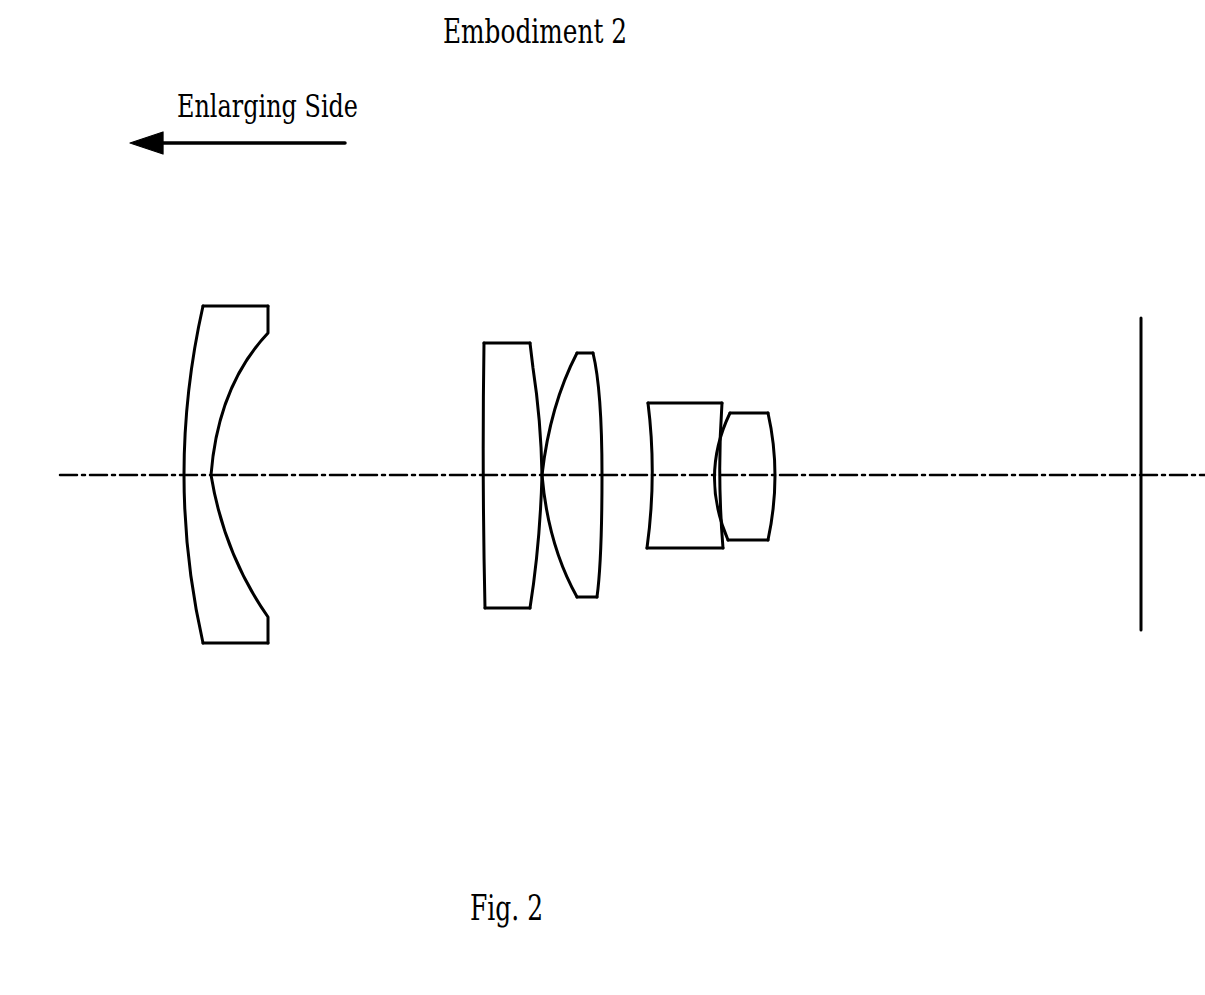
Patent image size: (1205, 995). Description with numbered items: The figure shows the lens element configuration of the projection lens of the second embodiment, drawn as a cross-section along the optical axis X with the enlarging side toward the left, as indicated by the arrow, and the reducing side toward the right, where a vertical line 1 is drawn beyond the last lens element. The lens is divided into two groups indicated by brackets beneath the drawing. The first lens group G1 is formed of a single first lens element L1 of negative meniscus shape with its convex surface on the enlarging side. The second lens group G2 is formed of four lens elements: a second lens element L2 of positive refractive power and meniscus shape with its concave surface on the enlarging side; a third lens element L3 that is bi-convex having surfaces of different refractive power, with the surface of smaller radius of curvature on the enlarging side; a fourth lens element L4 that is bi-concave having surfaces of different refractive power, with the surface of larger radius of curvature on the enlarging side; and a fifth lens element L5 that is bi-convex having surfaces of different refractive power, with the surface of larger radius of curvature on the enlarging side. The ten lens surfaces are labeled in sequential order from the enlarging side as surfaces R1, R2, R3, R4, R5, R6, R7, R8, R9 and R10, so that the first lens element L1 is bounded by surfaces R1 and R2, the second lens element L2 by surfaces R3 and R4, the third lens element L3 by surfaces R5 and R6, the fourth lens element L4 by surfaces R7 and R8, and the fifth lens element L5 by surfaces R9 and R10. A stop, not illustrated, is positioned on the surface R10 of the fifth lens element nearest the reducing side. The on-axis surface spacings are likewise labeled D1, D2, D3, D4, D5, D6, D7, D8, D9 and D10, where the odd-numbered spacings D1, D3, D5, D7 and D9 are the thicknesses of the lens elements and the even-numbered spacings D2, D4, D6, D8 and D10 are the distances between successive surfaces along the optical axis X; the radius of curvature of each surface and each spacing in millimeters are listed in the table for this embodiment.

The optical axis X is at (78, 477).
The image plane (screen / display element) 1 is at (1139, 373).
The first lens group G1 is at (283, 745).
The second lens group G2 is at (780, 745).
The first lens element L1 is at (211, 429).
The second lens element L2 is at (476, 433).
The third lens element L3 is at (592, 409).
The fourth lens element L4 is at (681, 406).
The fifth lens element L5 is at (787, 430).
The lens element surface R1 is at (190, 368).
The lens element surface R2 is at (237, 373).
The lens element surface R3 is at (483, 390).
The lens element surface R4 is at (541, 454).
The lens element surface R5 is at (553, 368).
The lens element surface R6 is at (600, 397).
The lens element surface R7 is at (653, 432).
The lens element surface R8 is at (714, 447).
The lens element surface R9 is at (725, 430).
The lens element surface R10 is at (778, 470).
The surface spacing D1 is at (203, 480).
The surface spacing D2 is at (313, 477).
The surface spacing D3 is at (514, 503).
The surface spacing D4 is at (541, 505).
The surface spacing D5 is at (571, 503).
The surface spacing D6 is at (607, 478).
The surface spacing D7 is at (686, 503).
The surface spacing D8 is at (730, 540).
The surface spacing D9 is at (744, 503).
The surface spacing D10 is at (840, 480).